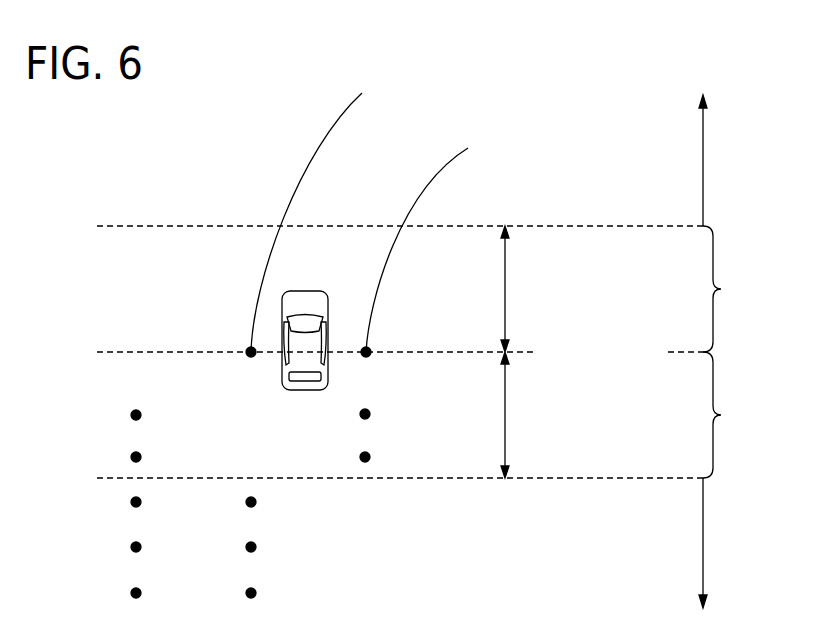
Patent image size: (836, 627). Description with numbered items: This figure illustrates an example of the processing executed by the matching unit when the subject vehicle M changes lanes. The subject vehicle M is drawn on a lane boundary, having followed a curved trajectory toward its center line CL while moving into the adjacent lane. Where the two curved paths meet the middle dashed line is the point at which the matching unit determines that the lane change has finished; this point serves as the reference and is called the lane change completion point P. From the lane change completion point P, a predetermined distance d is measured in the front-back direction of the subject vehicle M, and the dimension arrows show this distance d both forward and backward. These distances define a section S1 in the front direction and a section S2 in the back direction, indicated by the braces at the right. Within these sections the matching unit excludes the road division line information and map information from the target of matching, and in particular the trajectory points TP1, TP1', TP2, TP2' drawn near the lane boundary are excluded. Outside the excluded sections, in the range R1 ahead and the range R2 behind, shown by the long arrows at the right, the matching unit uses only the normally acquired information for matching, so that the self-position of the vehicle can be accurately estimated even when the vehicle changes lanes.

The subject vehicle M is at (305, 291).
The center line CL is at (452, 167).
The trajectory point TP1 is at (94, 414).
The trajectory point TP2 is at (94, 457).
The trajectory point TP1' is at (410, 414).
The trajectory point TP2' is at (411, 457).
The predetermined distance d is at (515, 352).
The lane change completion point P is at (602, 352).
The range R1 is at (719, 160).
The range R2 is at (719, 543).
The section S1 is at (729, 289).
The section S2 is at (729, 415).